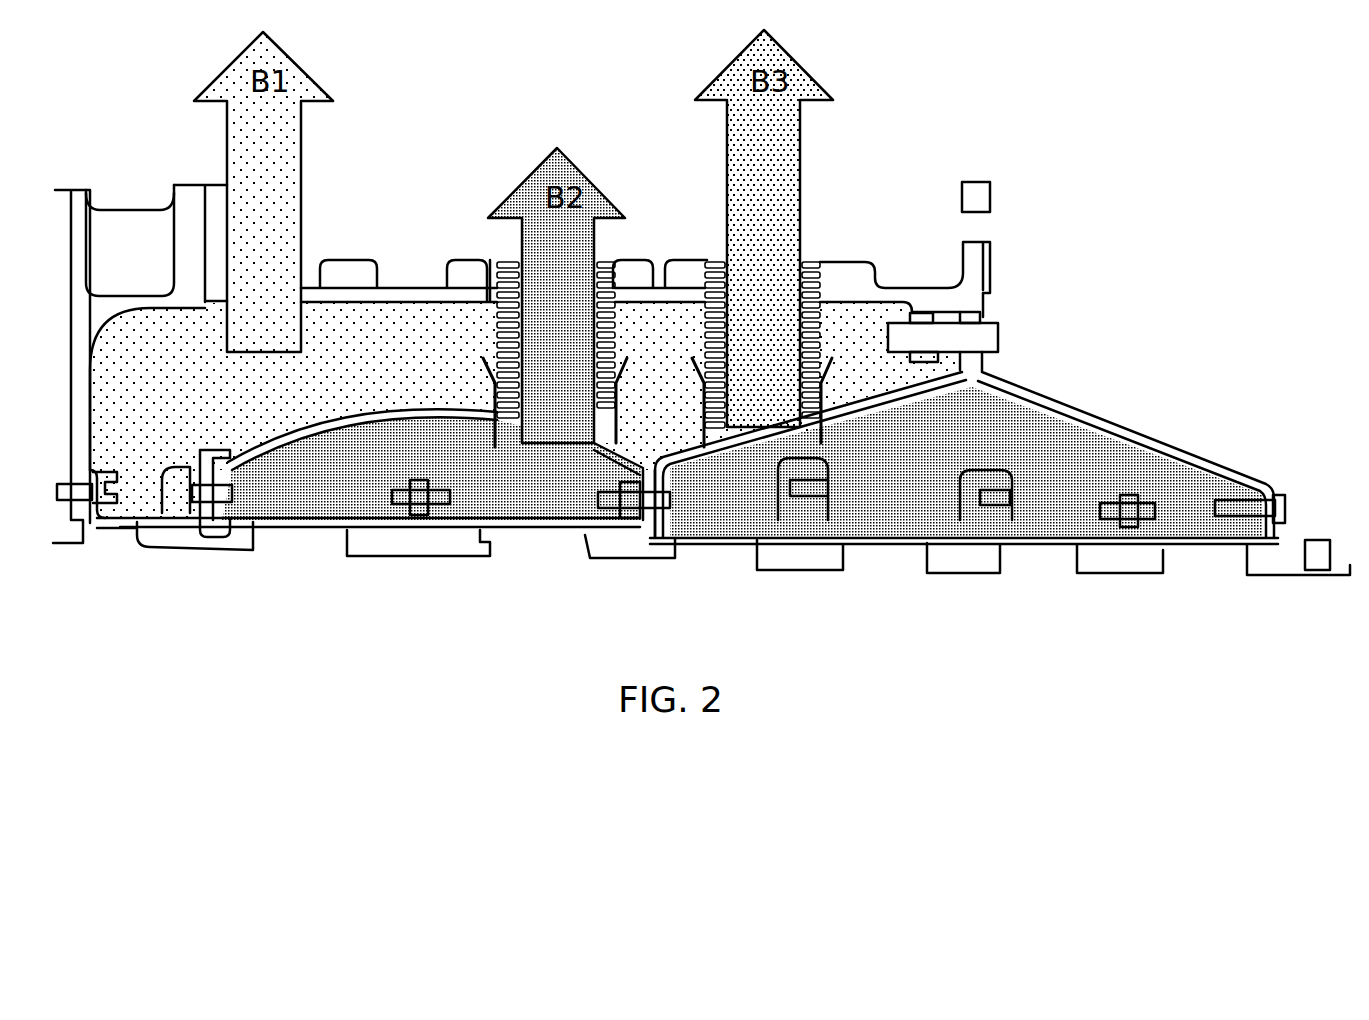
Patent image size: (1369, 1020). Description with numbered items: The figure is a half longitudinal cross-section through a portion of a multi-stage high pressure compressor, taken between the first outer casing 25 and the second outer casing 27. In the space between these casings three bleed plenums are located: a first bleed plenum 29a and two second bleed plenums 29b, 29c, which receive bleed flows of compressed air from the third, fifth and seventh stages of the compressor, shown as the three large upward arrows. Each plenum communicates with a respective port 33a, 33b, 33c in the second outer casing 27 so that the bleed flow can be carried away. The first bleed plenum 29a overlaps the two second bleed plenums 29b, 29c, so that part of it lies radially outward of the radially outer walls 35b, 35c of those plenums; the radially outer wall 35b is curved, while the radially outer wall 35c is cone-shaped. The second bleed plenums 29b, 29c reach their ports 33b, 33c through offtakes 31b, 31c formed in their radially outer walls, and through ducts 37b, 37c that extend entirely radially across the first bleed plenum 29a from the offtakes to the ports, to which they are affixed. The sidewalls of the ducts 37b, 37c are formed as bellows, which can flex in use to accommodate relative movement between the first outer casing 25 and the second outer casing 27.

The first outer casing 25 is at (1050, 545).
The second outer casing 27 is at (903, 287).
The first bleed plenum 29a is at (175, 360).
The second bleed plenum 29b is at (573, 490).
The second bleed plenum 29c is at (712, 508).
The offtake 31b is at (497, 410).
The offtake 31c is at (827, 430).
The port 33a is at (305, 288).
The port 33b is at (517, 262).
The port 33c is at (715, 262).
The radially outer wall 35b is at (320, 433).
The radially outer wall 35c is at (897, 400).
The duct 37b is at (613, 297).
The duct 37c is at (829, 320).